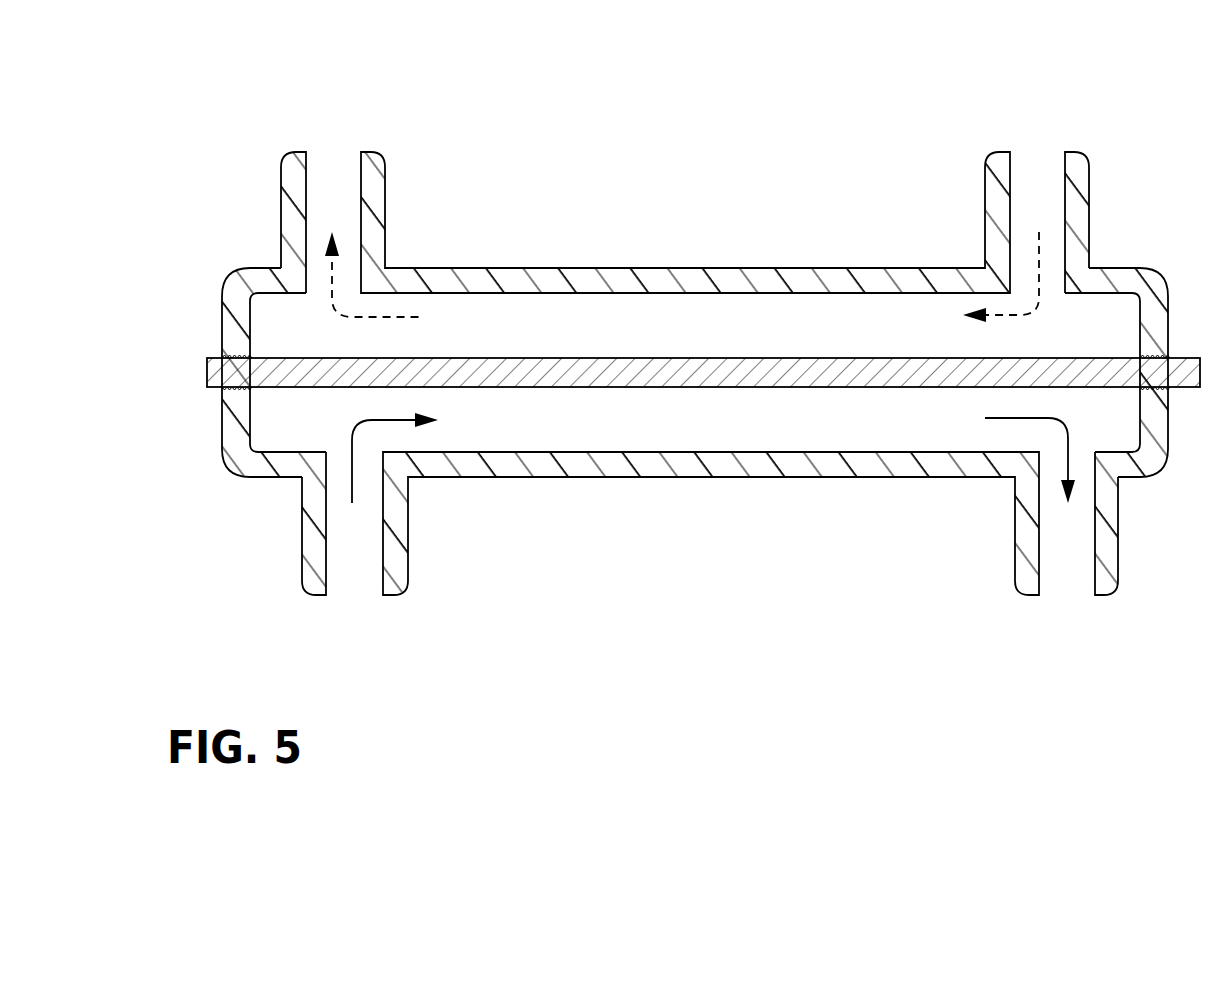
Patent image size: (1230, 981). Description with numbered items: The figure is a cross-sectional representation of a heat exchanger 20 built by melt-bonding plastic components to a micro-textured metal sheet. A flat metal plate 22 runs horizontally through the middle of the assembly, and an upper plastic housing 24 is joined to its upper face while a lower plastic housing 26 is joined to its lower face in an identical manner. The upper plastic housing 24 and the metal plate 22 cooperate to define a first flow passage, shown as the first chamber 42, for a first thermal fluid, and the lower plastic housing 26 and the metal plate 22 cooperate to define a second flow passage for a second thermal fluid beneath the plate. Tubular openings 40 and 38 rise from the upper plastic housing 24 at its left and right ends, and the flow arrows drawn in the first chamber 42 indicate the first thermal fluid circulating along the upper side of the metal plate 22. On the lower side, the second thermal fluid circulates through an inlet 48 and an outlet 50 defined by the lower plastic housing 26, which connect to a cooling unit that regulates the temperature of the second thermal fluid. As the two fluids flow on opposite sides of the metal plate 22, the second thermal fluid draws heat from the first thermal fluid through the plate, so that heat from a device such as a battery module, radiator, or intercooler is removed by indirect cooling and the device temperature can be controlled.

The heat exchanger 20 is at (563, 150).
The metal plate 22 is at (678, 378).
The upper plastic housing 24 is at (607, 268).
The lower plastic housing 26 is at (725, 478).
The right outer tube 38 is at (1089, 163).
The left outer tube 40 is at (283, 160).
The first chamber 42 is at (825, 343).
The inlet 48 is at (302, 583).
The outlet 50 is at (1119, 582).